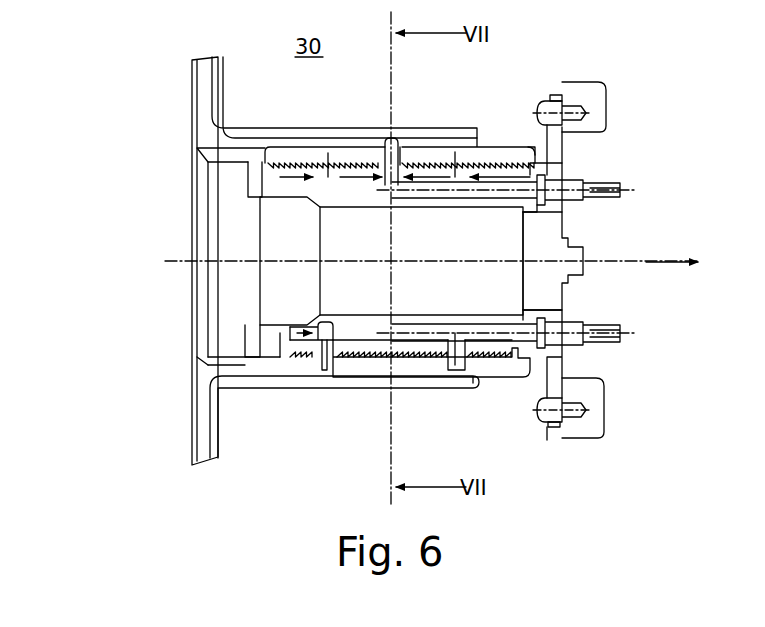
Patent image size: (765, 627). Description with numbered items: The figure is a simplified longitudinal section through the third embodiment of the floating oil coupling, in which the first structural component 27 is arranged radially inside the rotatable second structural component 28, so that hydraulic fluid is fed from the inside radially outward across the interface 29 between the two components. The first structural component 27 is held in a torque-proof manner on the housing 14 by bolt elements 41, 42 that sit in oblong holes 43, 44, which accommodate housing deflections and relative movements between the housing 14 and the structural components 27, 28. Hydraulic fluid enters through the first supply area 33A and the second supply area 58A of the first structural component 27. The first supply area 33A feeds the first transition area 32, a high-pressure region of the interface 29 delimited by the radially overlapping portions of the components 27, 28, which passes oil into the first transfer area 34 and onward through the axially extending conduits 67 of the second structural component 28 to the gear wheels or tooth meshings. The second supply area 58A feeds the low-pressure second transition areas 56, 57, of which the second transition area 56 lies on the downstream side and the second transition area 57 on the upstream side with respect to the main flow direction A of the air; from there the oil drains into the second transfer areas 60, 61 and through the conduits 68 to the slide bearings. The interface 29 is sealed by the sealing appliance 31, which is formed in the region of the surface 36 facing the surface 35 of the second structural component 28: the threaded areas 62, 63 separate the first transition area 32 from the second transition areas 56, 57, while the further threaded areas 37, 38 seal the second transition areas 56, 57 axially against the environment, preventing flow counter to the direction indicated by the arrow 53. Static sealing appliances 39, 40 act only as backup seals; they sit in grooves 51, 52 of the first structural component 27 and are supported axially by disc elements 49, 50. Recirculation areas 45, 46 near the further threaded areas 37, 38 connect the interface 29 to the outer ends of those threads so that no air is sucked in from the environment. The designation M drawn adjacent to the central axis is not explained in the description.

The housing 14 is at (598, 83).
The first structural component 27 is at (285, 212).
The second structural component 28 is at (186, 70).
The interface 29 is at (418, 160).
The sealing appliance 31 is at (491, 160).
The first transition area 32 is at (385, 138).
The first supply area 33A is at (615, 180).
The first transfer area 34 is at (402, 142).
The surface 35 is at (270, 163).
The surface 36 is at (197, 153).
The further threaded area 37 is at (266, 392).
The further threaded area 38 is at (480, 364).
The static sealing appliance 39 is at (211, 184).
The static sealing appliance 40 is at (546, 165).
The bolt element 41 is at (538, 101).
The bolt element 42 is at (546, 428).
The oblong hole 43 is at (556, 95).
The oblong hole 44 is at (556, 428).
The recirculation area 45 is at (301, 342).
The recirculation area 46 is at (538, 414).
The disc element 49 is at (561, 140).
The disc element 50 is at (563, 365).
The groove 51 is at (252, 195).
The groove 52 is at (524, 175).
The arrow 53 is at (302, 163).
The second transition area 56 is at (315, 343).
The second transition area 57 is at (445, 332).
The second supply area 58A is at (613, 338).
The second transfer area 60 is at (324, 370).
The second transfer area 61 is at (490, 384).
The threaded area 62 is at (346, 163).
The threaded area 63 is at (442, 142).
The conduit 67 is at (232, 131).
The conduit 68 is at (230, 395).
The main flow direction A is at (674, 256).
The center axis M is at (607, 256).